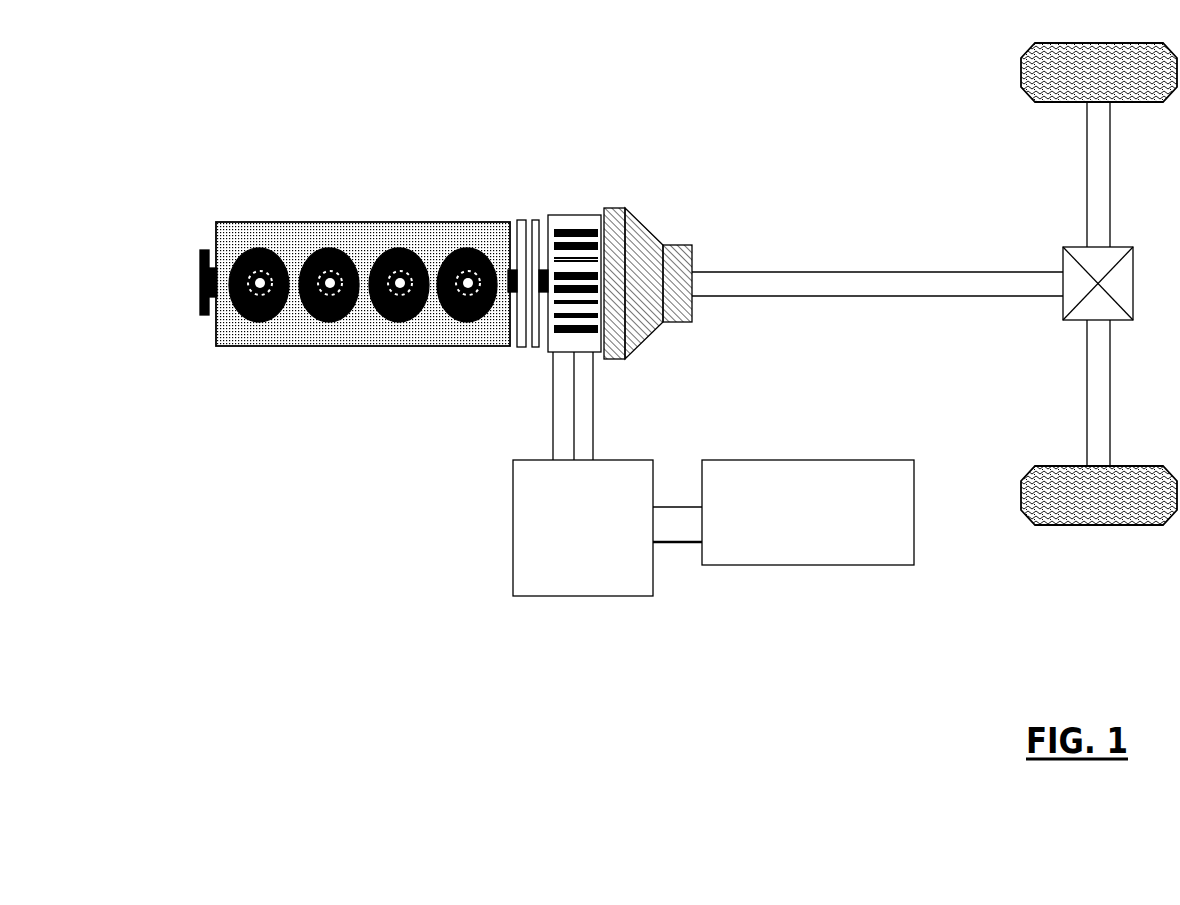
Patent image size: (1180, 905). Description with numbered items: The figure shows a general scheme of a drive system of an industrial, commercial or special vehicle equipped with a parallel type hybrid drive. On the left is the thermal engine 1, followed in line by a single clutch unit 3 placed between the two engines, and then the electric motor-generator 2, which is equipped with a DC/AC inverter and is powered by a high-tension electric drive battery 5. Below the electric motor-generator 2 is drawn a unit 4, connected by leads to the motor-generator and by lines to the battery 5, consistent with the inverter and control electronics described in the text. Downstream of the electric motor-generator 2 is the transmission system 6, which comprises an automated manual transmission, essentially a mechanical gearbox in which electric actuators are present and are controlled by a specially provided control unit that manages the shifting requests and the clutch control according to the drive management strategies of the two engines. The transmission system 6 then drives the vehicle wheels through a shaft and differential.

The thermal engine 1 is at (360, 248).
The electric motor-generator 2 is at (561, 220).
The single clutch unit 3 is at (537, 222).
The control unit / inverter 4 is at (608, 542).
The high-tension electric drive battery 5 is at (785, 530).
The transmission system 6 is at (630, 245).